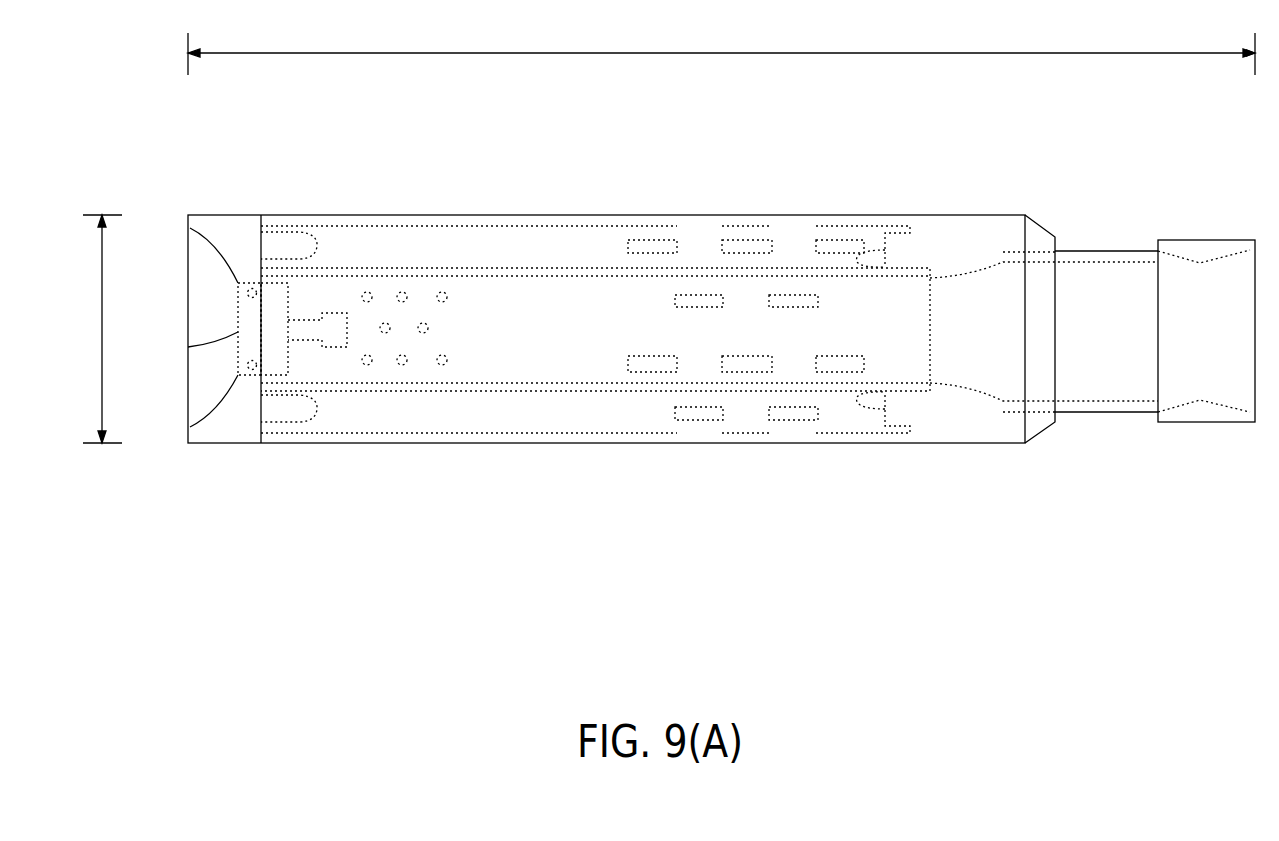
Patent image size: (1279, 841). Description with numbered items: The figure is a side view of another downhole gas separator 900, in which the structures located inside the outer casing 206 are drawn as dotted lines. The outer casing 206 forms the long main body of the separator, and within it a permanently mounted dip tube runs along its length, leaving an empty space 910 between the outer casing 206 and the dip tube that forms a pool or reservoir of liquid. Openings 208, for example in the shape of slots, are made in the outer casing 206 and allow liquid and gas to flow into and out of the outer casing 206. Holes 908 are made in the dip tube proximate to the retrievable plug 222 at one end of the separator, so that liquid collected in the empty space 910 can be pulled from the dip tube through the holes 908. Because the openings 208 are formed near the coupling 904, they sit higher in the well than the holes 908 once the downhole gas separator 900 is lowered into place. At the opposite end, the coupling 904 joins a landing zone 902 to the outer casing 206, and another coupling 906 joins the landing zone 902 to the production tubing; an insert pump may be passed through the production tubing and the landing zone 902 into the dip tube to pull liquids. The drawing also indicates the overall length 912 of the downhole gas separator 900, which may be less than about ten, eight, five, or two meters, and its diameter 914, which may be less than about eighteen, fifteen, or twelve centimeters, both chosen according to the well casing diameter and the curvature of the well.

The downhole gas separator 900 is at (672, 705).
The outer casing 206 is at (607, 215).
The openings 208 is at (790, 295).
The retrievable plug 222 is at (188, 347).
The landing zone 902 is at (1090, 412).
The coupling 904 is at (1046, 430).
The coupling 906 is at (1205, 240).
The holes 908 is at (441, 275).
The empty space 910 is at (562, 410).
The length 912 is at (640, 53).
The diameter 914 is at (104, 278).